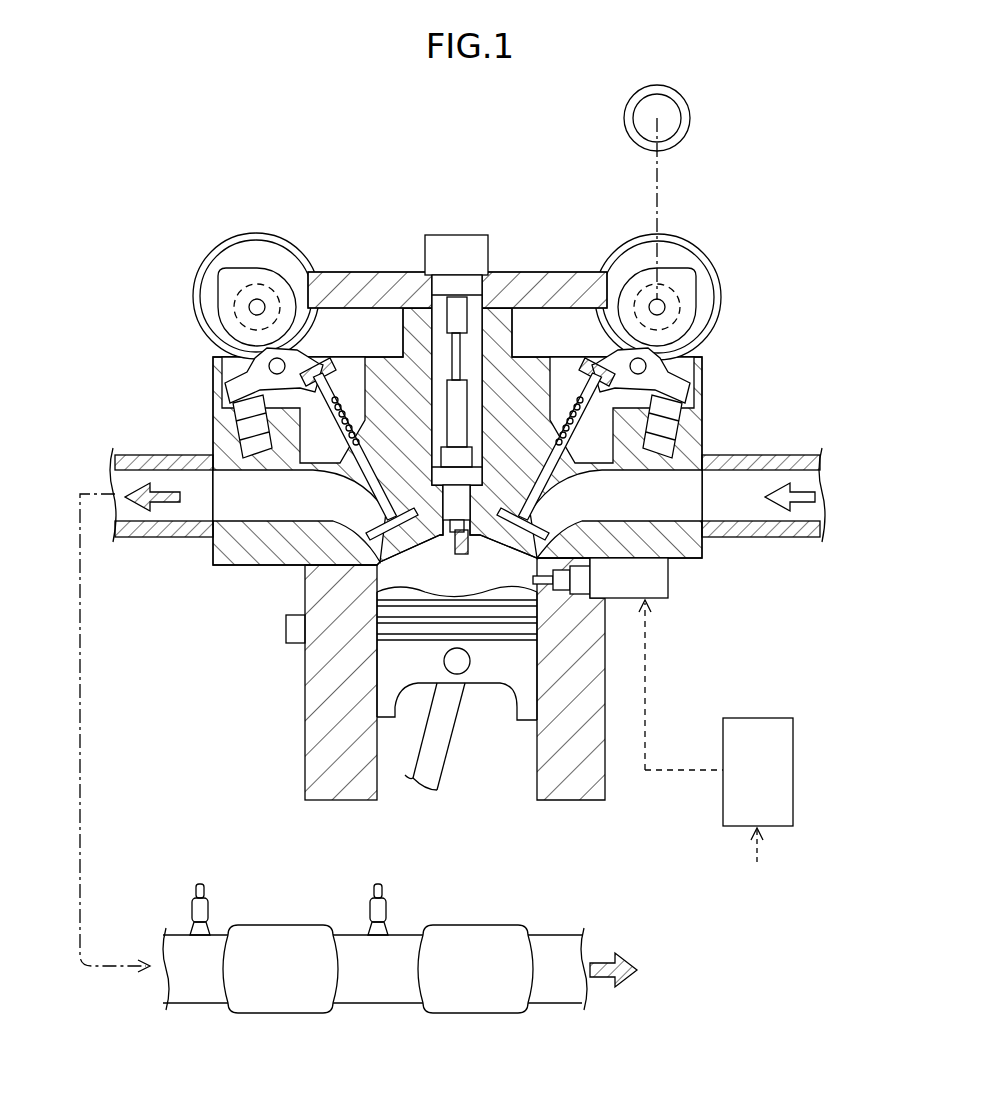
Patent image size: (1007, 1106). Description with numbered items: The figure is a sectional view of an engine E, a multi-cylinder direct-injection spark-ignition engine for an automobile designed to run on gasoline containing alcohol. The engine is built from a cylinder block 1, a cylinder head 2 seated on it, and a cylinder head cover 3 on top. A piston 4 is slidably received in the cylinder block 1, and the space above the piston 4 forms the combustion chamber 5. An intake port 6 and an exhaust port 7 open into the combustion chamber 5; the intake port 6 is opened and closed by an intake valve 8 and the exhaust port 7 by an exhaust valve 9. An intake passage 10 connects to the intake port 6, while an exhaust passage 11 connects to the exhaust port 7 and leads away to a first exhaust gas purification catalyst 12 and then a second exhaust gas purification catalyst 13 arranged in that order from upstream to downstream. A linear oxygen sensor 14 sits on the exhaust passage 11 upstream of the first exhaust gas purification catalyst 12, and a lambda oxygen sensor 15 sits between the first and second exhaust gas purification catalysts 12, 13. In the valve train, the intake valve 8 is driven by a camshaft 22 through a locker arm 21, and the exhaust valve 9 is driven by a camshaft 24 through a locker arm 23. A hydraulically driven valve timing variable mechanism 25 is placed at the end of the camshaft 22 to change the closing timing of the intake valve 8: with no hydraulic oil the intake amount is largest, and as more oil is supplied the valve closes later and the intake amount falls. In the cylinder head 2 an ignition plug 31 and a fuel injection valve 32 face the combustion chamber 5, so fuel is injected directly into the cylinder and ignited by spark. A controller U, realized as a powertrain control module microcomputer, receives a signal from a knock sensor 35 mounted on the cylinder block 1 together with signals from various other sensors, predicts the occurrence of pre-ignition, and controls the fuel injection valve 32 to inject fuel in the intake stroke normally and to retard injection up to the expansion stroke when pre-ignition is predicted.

The engine E is at (332, 115).
The cylinder block 1 is at (317, 723).
The cylinder head 2 is at (232, 563).
The cylinder head cover 3 is at (350, 282).
The piston 4 is at (487, 673).
The combustion chamber 5 is at (433, 568).
The intake port 6 is at (683, 510).
The exhaust port 7 is at (233, 493).
The intake valve 8 is at (632, 560).
The exhaust valve 9 is at (245, 445).
The intake passage 10 is at (775, 466).
The exhaust passage 11 is at (152, 538).
The first exhaust gas purification catalyst 12 is at (280, 1003).
The second exhaust gas purification catalyst 13 is at (472, 1003).
The linear O2 sensor 14 is at (196, 910).
The lambda O2 sensor 15 is at (374, 910).
The locker arm 21 is at (675, 382).
The camshaft 22 is at (692, 305).
The locker arm 23 is at (243, 373).
The camshaft 24 is at (236, 278).
The valve timing variable mechanism 25 is at (690, 112).
The ignition plug 31 is at (438, 505).
The fuel injection valve 32 is at (658, 598).
The knock sensor 35 is at (286, 632).
The controller U is at (793, 758).